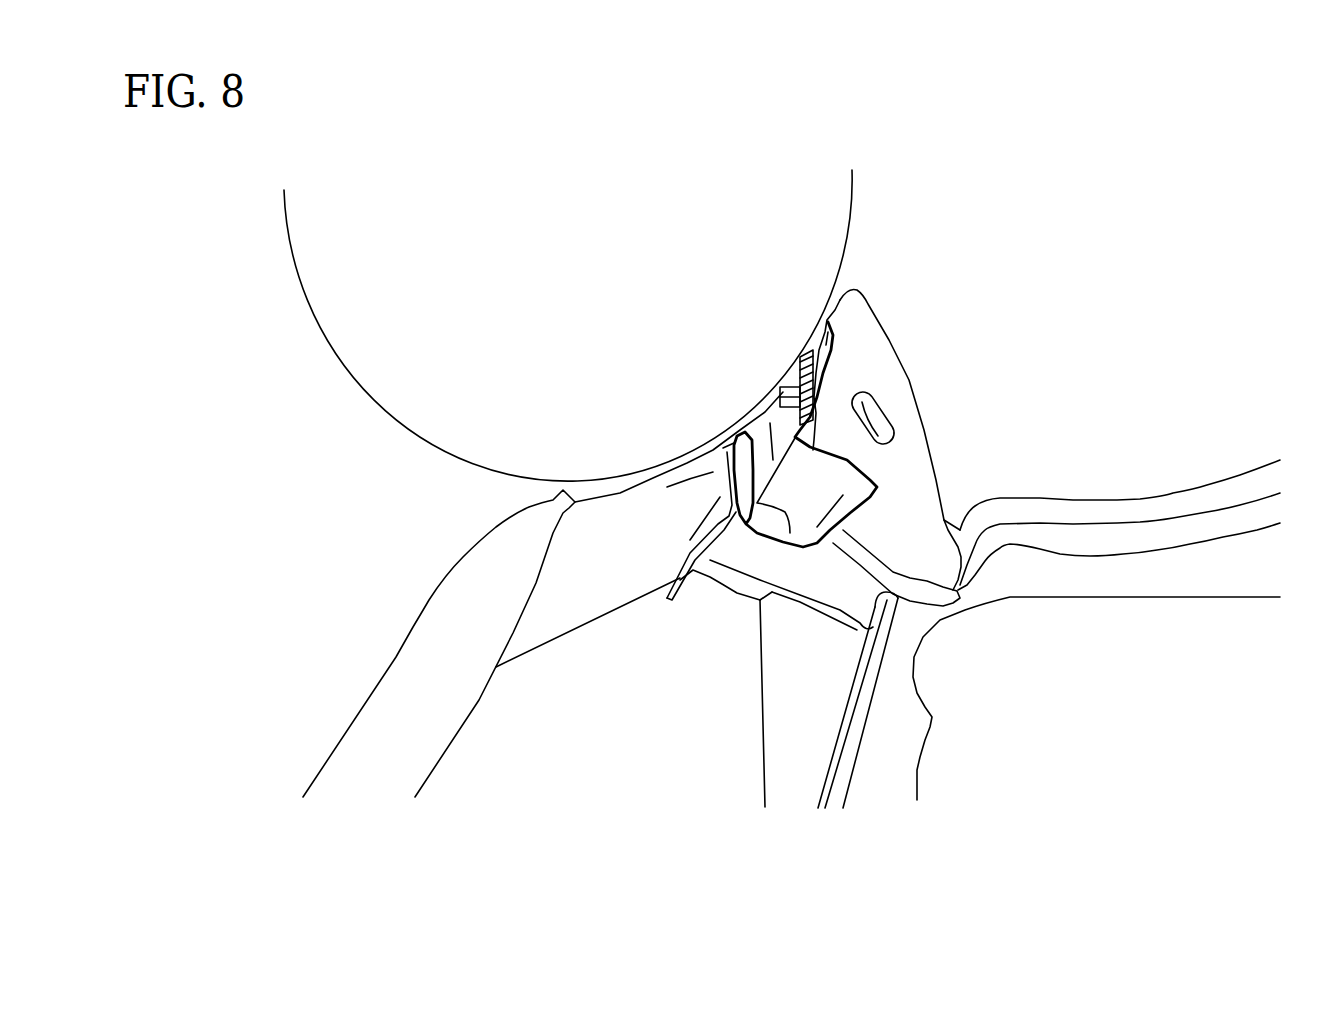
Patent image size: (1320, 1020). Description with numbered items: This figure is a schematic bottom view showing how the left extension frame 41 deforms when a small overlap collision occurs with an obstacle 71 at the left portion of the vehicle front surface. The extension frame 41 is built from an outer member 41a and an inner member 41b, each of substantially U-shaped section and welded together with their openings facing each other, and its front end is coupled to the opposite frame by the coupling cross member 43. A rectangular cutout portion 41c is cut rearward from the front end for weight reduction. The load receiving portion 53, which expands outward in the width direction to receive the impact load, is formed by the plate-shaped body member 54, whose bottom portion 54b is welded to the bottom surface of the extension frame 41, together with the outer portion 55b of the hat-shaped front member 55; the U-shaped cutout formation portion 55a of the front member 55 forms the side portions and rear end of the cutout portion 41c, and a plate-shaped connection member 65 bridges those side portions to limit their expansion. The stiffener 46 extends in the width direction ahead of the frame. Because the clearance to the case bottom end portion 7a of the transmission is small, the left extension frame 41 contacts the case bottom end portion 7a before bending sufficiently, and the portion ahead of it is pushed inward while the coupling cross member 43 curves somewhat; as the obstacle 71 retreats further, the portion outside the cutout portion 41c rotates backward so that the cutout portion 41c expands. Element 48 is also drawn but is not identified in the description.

The obstacle 71 is at (398, 400).
The stiffener 46 is at (427, 642).
The side member 48 is at (603, 597).
The load receiving portion 53 is at (877, 300).
The body member 54 is at (903, 387).
The bottom portion 54b is at (917, 492).
The front member 55 is at (788, 543).
The cutout formation portion 55a is at (813, 453).
The outer portion 55b is at (770, 423).
The connection member 65 is at (725, 432).
The extension frame 41 is at (1119, 466).
The outer member 41a is at (1117, 507).
The inner member 41b is at (1199, 527).
The cutout portion 41c is at (808, 487).
The coupling cross member 43 is at (785, 742).
The case bottom end portion 7a is at (1105, 750).